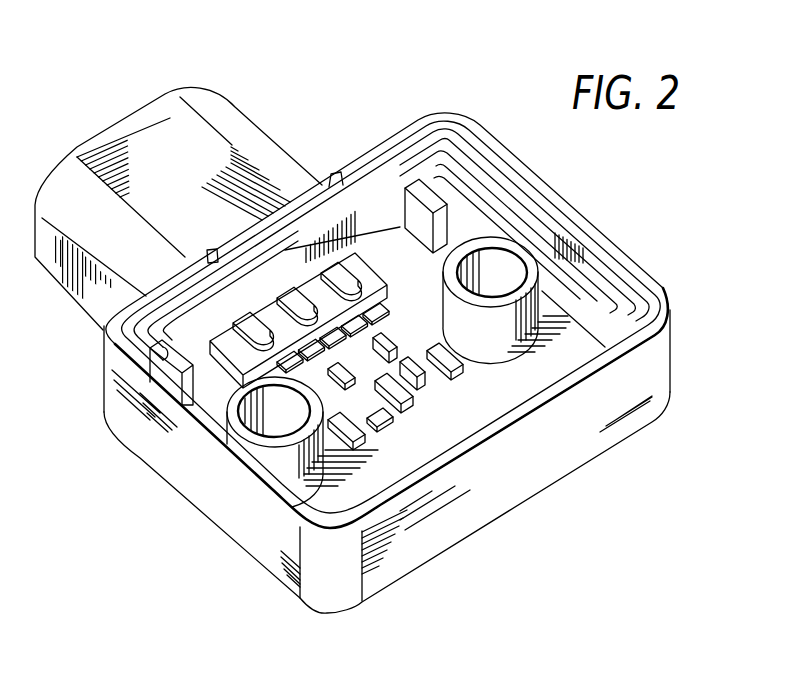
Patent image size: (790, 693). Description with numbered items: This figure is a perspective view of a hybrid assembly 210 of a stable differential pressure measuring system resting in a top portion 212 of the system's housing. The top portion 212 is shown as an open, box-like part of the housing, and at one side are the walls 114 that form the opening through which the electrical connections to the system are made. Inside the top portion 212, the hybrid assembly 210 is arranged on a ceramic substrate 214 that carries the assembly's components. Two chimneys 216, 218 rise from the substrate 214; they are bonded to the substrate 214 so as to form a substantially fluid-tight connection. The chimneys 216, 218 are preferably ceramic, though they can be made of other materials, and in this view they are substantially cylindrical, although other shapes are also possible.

The walls 114 is at (176, 82).
The hybrid assembly 210 is at (352, 493).
The top portion 212 is at (565, 462).
The ceramic substrate 214 is at (570, 343).
The chimney 216 is at (531, 262).
The chimney 218 is at (238, 412).